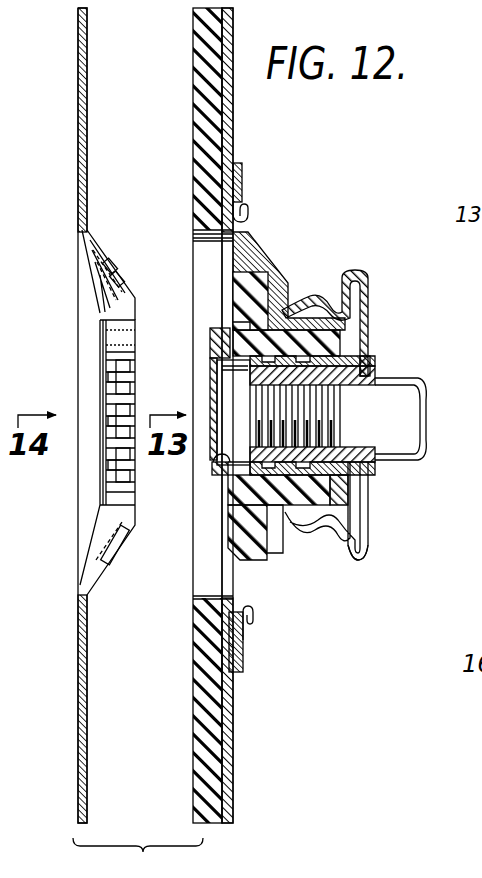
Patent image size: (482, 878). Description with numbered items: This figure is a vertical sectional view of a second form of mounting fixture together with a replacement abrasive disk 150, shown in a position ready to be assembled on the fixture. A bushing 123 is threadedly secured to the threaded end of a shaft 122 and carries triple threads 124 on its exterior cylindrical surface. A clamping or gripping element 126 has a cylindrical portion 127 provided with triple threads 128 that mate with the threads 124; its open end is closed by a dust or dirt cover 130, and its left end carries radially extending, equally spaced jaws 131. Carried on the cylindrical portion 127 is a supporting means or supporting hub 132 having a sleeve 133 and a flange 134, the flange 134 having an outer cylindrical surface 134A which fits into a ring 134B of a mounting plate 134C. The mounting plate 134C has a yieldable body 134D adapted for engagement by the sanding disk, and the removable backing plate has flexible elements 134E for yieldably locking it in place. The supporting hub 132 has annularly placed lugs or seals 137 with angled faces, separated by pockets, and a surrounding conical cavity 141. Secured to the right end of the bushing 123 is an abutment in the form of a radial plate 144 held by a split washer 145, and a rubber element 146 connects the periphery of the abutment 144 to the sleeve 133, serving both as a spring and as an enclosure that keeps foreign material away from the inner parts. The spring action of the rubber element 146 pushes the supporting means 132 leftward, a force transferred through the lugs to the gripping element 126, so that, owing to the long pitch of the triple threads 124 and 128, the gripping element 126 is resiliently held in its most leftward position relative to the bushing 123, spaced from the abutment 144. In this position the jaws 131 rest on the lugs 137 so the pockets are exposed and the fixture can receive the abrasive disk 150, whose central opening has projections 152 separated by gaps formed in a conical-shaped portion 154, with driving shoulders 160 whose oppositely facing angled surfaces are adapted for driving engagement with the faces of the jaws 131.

The shaft 122 is at (424, 410).
The bushing 123 is at (376, 378).
The triple threads 124 is at (330, 476).
The clamping or gripping element 126 is at (213, 462).
The cylindrical portion 127 is at (240, 400).
The triple threads 128 is at (248, 610).
The dust or dirt cover 130 is at (222, 475).
The jaws 131 is at (210, 341).
The supporting means or supporting hub 132 is at (270, 250).
The sleeve 133 is at (303, 300).
The flange 134 is at (234, 432).
The outer cylindrical surface 134A is at (248, 208).
The ring 134B is at (244, 664).
The mounting plate 134C is at (228, 755).
The yieldable body 134D is at (218, 800).
The flexible elements 134E is at (254, 618).
The lugs or seals 137 is at (233, 325).
The conical cavity 141 is at (233, 290).
The abutment or radial plate 144 is at (370, 520).
The split washer 145 is at (368, 362).
The rubber element 146 is at (365, 556).
The abrasive disk 150 is at (86, 658).
The projections 152 is at (122, 380).
The conical-shaped portion 154 is at (113, 275).
The driving shoulders 160 is at (103, 437).